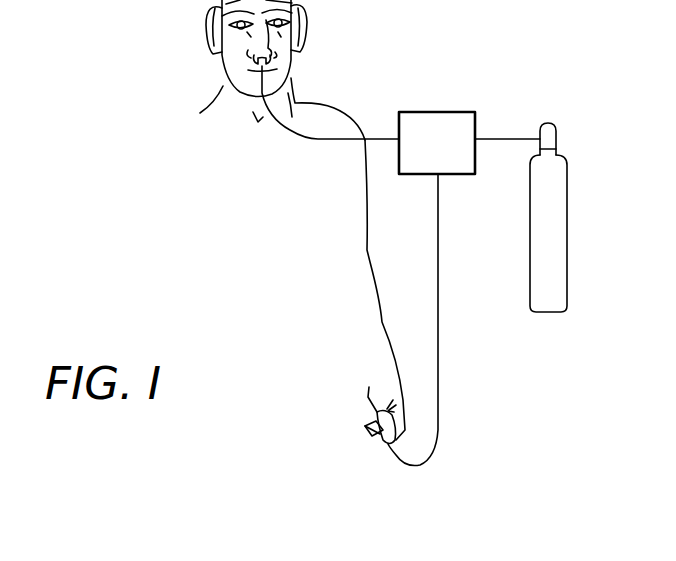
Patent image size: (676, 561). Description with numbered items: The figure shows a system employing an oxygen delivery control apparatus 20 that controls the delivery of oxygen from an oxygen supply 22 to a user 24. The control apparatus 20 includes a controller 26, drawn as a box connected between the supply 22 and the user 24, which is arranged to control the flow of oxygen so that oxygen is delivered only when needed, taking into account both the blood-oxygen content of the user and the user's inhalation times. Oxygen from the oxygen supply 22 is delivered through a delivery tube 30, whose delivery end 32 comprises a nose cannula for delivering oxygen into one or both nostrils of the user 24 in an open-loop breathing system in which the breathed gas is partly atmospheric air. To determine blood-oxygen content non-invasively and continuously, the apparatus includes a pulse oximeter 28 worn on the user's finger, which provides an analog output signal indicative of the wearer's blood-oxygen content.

The oxygen delivery control apparatus 20 is at (472, 100).
The oxygen supply 22 is at (567, 215).
The user 24 is at (172, 184).
The controller 26 is at (423, 112).
The pulse oximeter 28 is at (366, 432).
The delivery tube 30 is at (375, 138).
The delivery end 32 is at (243, 62).